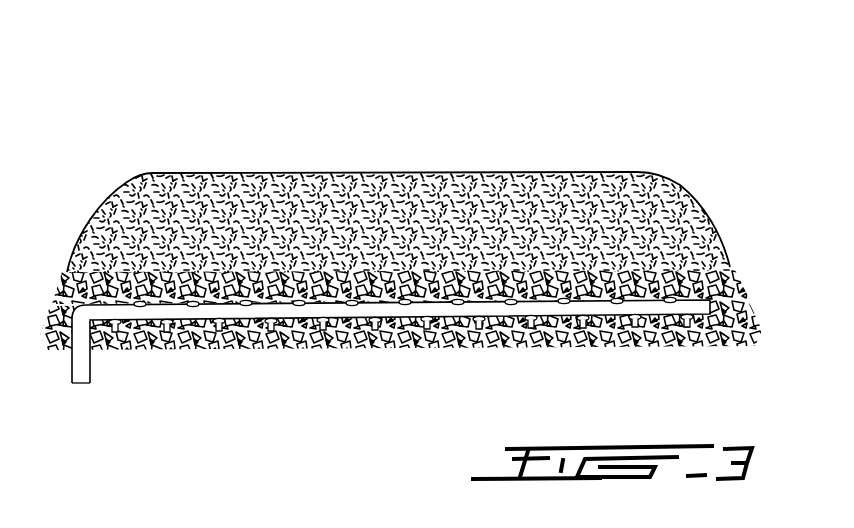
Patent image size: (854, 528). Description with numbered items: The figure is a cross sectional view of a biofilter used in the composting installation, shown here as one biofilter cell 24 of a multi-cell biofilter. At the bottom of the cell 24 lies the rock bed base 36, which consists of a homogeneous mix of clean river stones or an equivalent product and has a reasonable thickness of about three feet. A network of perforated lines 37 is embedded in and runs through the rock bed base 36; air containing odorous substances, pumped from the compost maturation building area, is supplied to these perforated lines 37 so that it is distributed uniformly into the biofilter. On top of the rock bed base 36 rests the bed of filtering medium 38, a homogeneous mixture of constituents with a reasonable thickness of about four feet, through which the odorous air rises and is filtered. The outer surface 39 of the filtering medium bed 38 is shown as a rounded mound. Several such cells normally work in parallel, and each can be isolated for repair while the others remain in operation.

The biofilter cell 24 is at (121, 178).
The rock bed base 36 is at (273, 347).
The perforated lines 37 is at (519, 337).
The bed of filtering medium 38 is at (384, 325).
The outer surface of filter body 39 is at (536, 172).